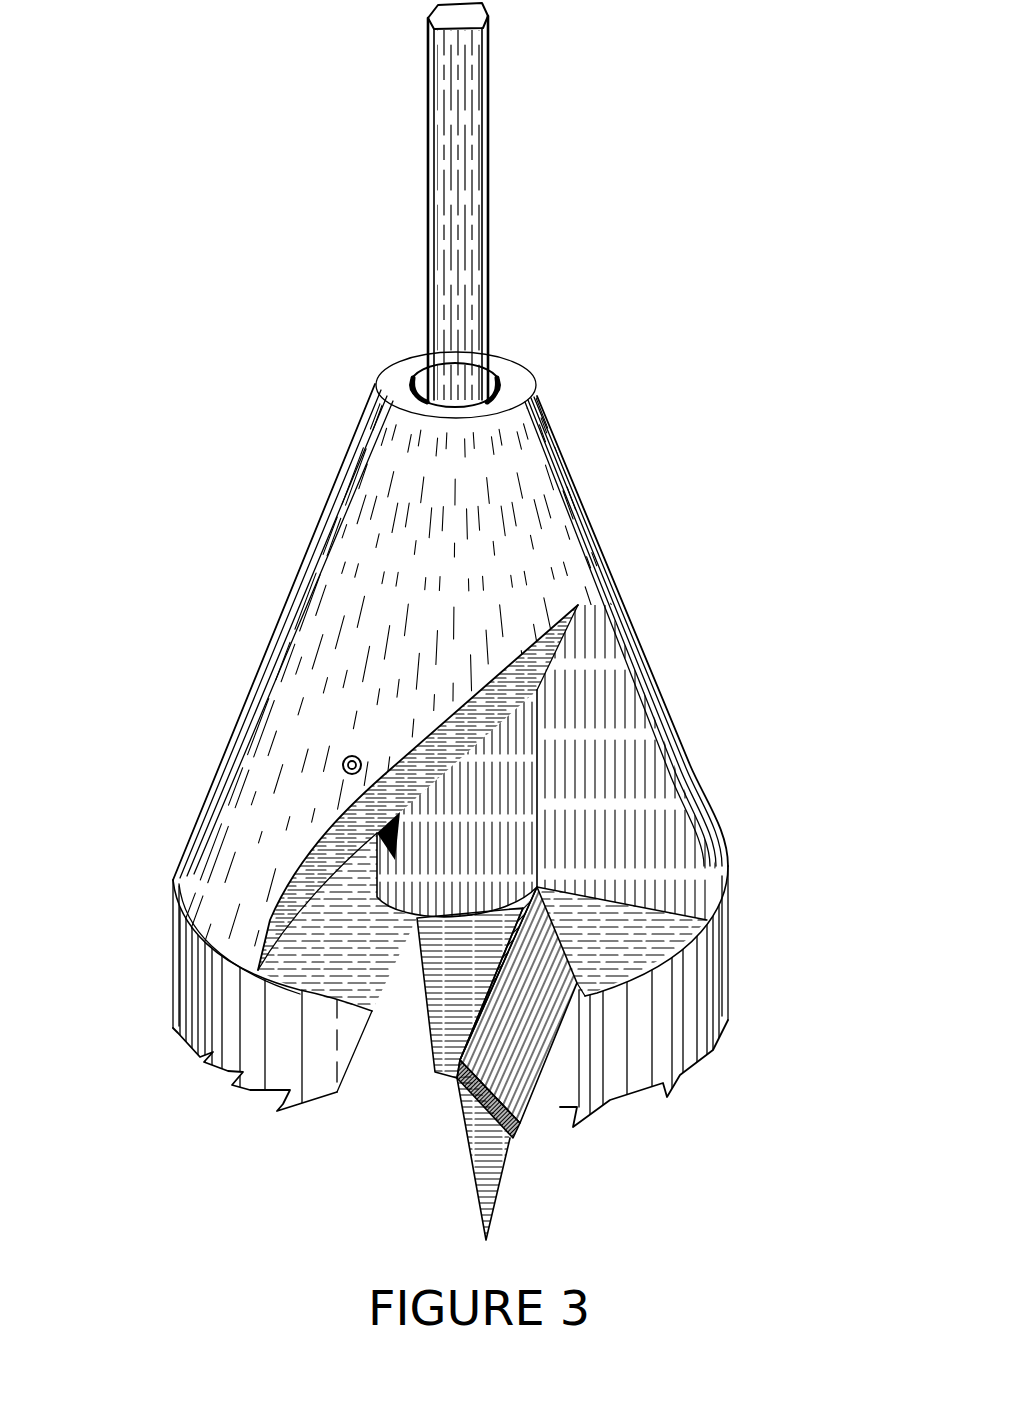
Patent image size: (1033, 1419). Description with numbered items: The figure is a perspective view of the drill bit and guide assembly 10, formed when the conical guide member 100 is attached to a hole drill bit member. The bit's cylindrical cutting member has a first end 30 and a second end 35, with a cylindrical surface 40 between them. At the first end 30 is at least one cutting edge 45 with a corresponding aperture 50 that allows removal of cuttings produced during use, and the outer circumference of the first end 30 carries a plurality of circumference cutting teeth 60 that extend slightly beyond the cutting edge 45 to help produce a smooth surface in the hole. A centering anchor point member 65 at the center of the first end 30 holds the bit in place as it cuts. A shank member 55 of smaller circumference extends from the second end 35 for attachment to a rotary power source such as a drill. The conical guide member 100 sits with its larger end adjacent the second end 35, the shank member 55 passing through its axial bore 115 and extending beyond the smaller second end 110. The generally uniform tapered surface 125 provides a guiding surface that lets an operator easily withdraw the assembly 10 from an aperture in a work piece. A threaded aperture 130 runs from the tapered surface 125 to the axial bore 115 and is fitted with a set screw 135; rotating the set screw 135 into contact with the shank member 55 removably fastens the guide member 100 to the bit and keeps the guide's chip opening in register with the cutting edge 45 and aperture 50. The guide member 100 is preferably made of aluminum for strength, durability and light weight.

The drill bit and guide assembly 10 is at (738, 352).
The first end 30 is at (620, 1110).
The second end 35 is at (366, 966).
The cylindrical surface 40 is at (215, 995).
The cutting edge 45 is at (460, 1110).
The aperture 50 is at (390, 1080).
The shank member 55 is at (473, 222).
The circumference cutting teeth 60 is at (257, 1090).
The centering anchor point member 65 is at (493, 1178).
The conical guide member 100 is at (495, 605).
The second end 110 is at (520, 383).
The axial bore 115 is at (490, 367).
The tapered surface 125 is at (310, 523).
The threaded aperture 130 is at (335, 765).
The set screw 135 is at (340, 755).